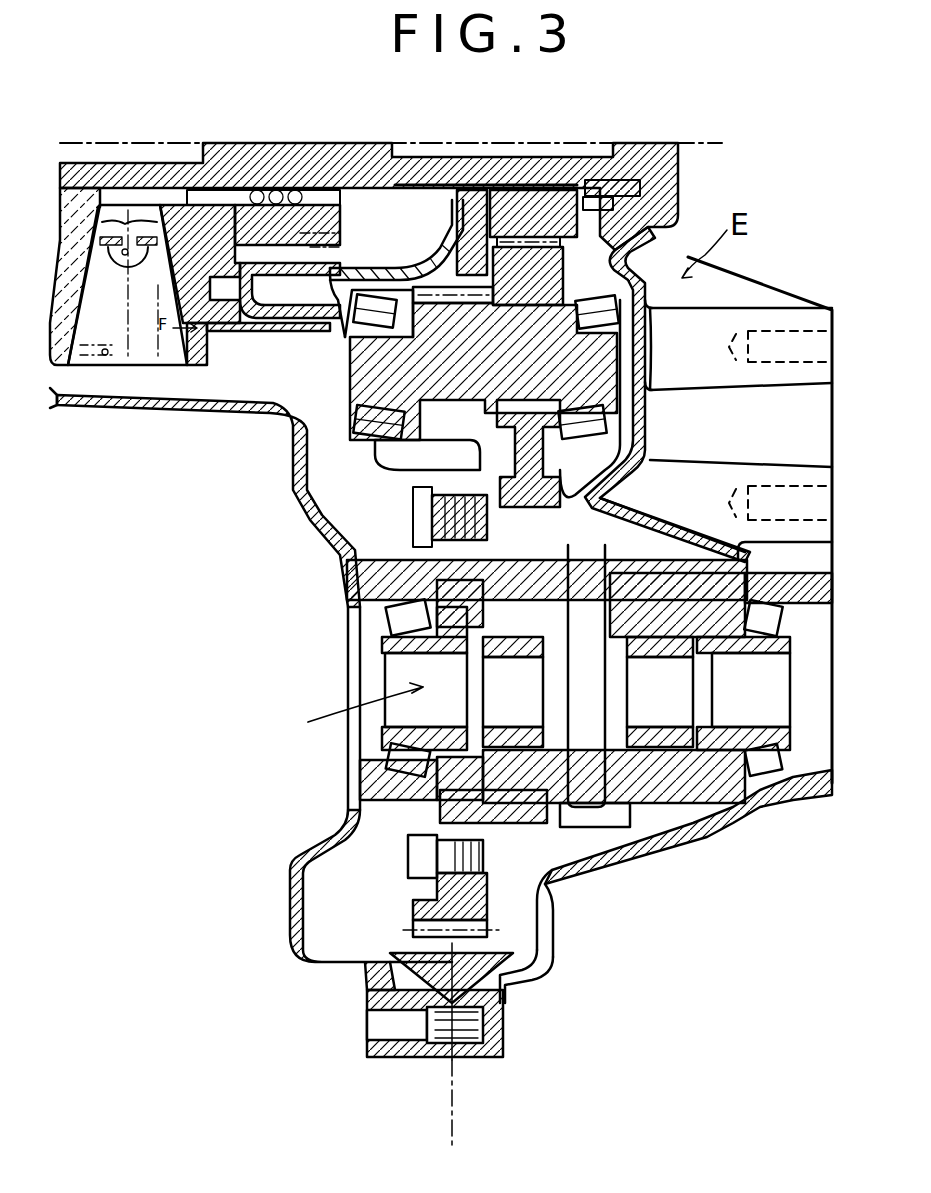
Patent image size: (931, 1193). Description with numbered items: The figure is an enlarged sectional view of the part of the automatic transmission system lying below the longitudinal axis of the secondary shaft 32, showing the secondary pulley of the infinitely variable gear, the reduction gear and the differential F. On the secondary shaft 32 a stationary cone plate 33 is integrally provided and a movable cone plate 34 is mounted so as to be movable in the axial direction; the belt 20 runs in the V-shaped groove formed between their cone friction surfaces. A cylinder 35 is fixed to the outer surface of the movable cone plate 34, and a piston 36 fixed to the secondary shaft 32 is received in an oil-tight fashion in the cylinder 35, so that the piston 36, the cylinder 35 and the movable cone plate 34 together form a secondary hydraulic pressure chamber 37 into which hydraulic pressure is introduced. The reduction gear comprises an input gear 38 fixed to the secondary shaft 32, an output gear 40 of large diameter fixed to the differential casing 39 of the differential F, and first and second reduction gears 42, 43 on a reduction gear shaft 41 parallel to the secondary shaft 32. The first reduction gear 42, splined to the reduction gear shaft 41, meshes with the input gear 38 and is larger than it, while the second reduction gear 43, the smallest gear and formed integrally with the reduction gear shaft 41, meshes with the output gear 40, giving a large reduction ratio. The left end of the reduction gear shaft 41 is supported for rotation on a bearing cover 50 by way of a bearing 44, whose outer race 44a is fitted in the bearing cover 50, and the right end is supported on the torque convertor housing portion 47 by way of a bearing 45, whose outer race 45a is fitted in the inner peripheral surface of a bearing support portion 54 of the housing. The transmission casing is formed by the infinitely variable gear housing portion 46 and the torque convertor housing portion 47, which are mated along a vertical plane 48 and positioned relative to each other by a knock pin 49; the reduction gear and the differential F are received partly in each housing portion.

The belt 20 is at (138, 252).
The secondary shaft 32 is at (328, 152).
The stationary cone plate 33 is at (88, 285).
The movable cone plate 34 is at (207, 353).
The cylinder 35 is at (286, 331).
The piston 36 is at (264, 282).
The secondary hydraulic pressure chamber 37 is at (237, 270).
The input gear 38 is at (530, 190).
The differential casing 39 is at (546, 817).
The output gear 40 is at (345, 548).
The reduction gear shaft 41 is at (398, 368).
The first reduction gear 42 is at (608, 258).
The second reduction gear 43 is at (428, 285).
The bearing 44 is at (420, 405).
The outer race 44a is at (345, 462).
The bearing 45 is at (640, 415).
The outer race 45a is at (600, 480).
The infinitely variable gear housing portion 46 is at (138, 415).
The torque convertor housing portion 47 is at (713, 320).
The vertical plane 48 is at (455, 1080).
The knock pin 49 is at (467, 1018).
The bearing cover 50 is at (300, 415).
The bearing support portion 54 is at (650, 360).
The differential F is at (535, 686).